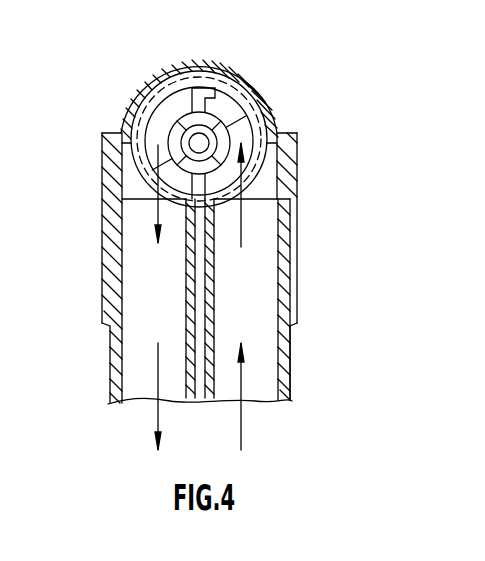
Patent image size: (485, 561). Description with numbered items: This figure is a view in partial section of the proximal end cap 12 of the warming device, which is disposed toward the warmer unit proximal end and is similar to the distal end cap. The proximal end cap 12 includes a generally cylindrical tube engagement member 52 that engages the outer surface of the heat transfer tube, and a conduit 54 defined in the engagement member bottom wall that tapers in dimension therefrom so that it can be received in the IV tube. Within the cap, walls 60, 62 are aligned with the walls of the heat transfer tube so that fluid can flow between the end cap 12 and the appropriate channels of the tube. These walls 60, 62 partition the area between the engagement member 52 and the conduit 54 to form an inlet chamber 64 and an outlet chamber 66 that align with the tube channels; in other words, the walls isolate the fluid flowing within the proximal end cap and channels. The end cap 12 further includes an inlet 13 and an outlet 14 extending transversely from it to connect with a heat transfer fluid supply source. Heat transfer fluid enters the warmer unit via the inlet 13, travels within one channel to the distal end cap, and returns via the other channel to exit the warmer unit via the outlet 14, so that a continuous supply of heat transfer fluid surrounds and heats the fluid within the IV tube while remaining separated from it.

The proximal end cap 12 is at (312, 232).
The inlet 13 is at (292, 362).
The outlet 14 is at (110, 367).
The tube engagement member 52 is at (246, 82).
The conduit 54 is at (172, 130).
The wall 60 is at (223, 93).
The wall 62 is at (278, 193).
The inlet chamber 64 is at (233, 117).
The outlet chamber 66 is at (168, 112).